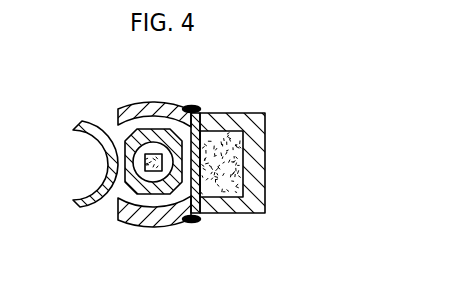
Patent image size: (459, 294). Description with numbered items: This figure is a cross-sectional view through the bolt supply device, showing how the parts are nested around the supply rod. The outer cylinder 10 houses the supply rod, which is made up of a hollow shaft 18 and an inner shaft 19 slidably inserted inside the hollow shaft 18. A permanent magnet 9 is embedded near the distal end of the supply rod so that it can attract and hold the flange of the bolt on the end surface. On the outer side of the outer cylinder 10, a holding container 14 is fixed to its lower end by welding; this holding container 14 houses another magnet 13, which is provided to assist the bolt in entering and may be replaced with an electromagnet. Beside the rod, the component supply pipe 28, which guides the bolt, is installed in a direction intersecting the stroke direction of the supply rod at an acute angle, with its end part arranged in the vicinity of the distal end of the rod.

The magnet 9 is at (153, 171).
The outer cylinder 10 is at (172, 106).
The magnet 13 is at (221, 178).
The holding container 14 is at (265, 176).
The hollow shaft 18 is at (158, 111).
The inner shaft 19 is at (121, 133).
The component supply pipe 28 is at (83, 120).